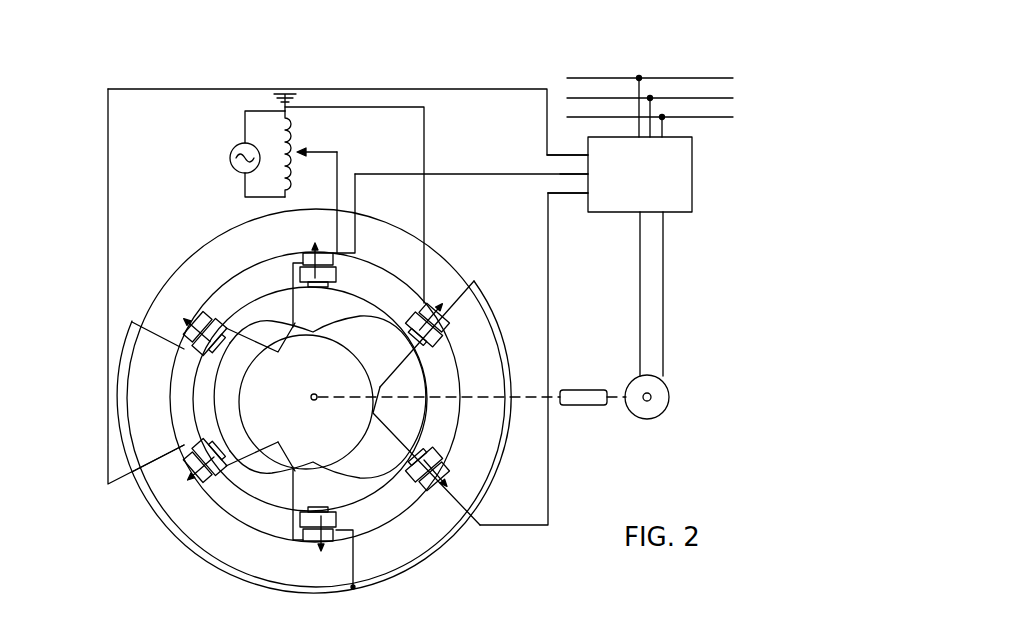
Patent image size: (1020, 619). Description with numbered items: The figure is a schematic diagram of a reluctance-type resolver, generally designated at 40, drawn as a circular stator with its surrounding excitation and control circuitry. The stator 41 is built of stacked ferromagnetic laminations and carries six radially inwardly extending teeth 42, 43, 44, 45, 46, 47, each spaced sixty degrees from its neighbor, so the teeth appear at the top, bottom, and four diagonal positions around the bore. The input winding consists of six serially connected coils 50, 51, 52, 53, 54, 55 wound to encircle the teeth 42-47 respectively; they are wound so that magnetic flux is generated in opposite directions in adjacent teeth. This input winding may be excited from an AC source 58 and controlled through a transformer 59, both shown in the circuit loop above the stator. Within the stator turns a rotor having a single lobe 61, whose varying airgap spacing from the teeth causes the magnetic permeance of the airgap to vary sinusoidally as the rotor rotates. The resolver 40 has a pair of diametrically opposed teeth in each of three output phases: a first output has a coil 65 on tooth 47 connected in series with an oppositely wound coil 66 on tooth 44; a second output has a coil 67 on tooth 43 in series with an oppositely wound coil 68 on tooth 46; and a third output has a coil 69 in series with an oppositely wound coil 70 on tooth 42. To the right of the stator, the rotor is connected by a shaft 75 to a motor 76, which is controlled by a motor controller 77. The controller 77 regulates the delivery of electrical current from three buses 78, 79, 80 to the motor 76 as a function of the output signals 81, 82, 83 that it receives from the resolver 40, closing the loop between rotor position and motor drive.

The three-lobe rotor reluctance-type resolver 40 is at (92, 185).
The stator 41 is at (198, 258).
The tooth 42 is at (160, 312).
The tooth 43 is at (196, 470).
The tooth 44 is at (302, 546).
The tooth 45 is at (444, 468).
The tooth 46 is at (440, 338).
The tooth 47 is at (300, 250).
The coil 50 is at (198, 372).
The coil 51 is at (190, 437).
The coil 52 is at (355, 538).
The coil 53 is at (384, 492).
The coil 54 is at (410, 320).
The coil 55 is at (330, 280).
The AC source 58 is at (232, 154).
The transformer 59 is at (298, 146).
The lobe 61 is at (290, 500).
The coil 65 is at (322, 248).
The coil 66 is at (320, 552).
The coil 67 is at (186, 466).
The coil 68 is at (466, 314).
The coil 69 is at (436, 478).
The coil 70 is at (200, 332).
The shaft 75 is at (586, 406).
The motor 76 is at (666, 406).
The motor controller 77 is at (692, 190).
The bus 78 is at (580, 78).
The bus 79 is at (590, 98).
The bus 80 is at (618, 117).
The output signal 81 is at (580, 160).
The output signal 82 is at (582, 178).
The output signal 83 is at (582, 196).